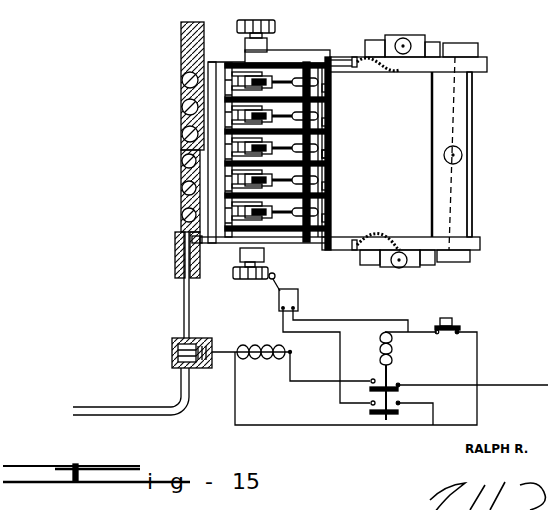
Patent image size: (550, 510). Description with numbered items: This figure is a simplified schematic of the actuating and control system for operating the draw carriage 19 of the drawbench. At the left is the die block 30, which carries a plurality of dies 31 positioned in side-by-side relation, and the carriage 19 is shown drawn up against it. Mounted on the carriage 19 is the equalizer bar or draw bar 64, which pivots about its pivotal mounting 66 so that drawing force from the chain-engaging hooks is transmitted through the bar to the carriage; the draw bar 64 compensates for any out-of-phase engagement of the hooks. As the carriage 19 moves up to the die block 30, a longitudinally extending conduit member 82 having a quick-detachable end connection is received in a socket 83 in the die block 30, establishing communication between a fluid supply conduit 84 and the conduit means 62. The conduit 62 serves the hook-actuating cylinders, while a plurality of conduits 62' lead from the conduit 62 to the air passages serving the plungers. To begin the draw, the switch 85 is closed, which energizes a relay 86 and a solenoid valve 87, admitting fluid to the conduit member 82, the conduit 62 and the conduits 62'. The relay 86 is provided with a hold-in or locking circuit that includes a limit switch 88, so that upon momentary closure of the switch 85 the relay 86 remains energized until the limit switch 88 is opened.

The die block 30 is at (181, 48).
The dies 31 is at (181, 80).
The draw carriage 19 is at (380, 173).
The conduit means 62 is at (375, 153).
The conduits 62' is at (341, 161).
The equalizer bar or draw bar 64 is at (478, 120).
The pivotal mounting 66 is at (462, 158).
The conduit member 82 is at (213, 246).
The socket 83 is at (181, 232).
The fluid supply conduit 84 is at (183, 300).
The switch 85 is at (460, 322).
The relay 86 is at (403, 376).
The solenoid valve 87 is at (258, 366).
The limit switch 88 is at (298, 298).